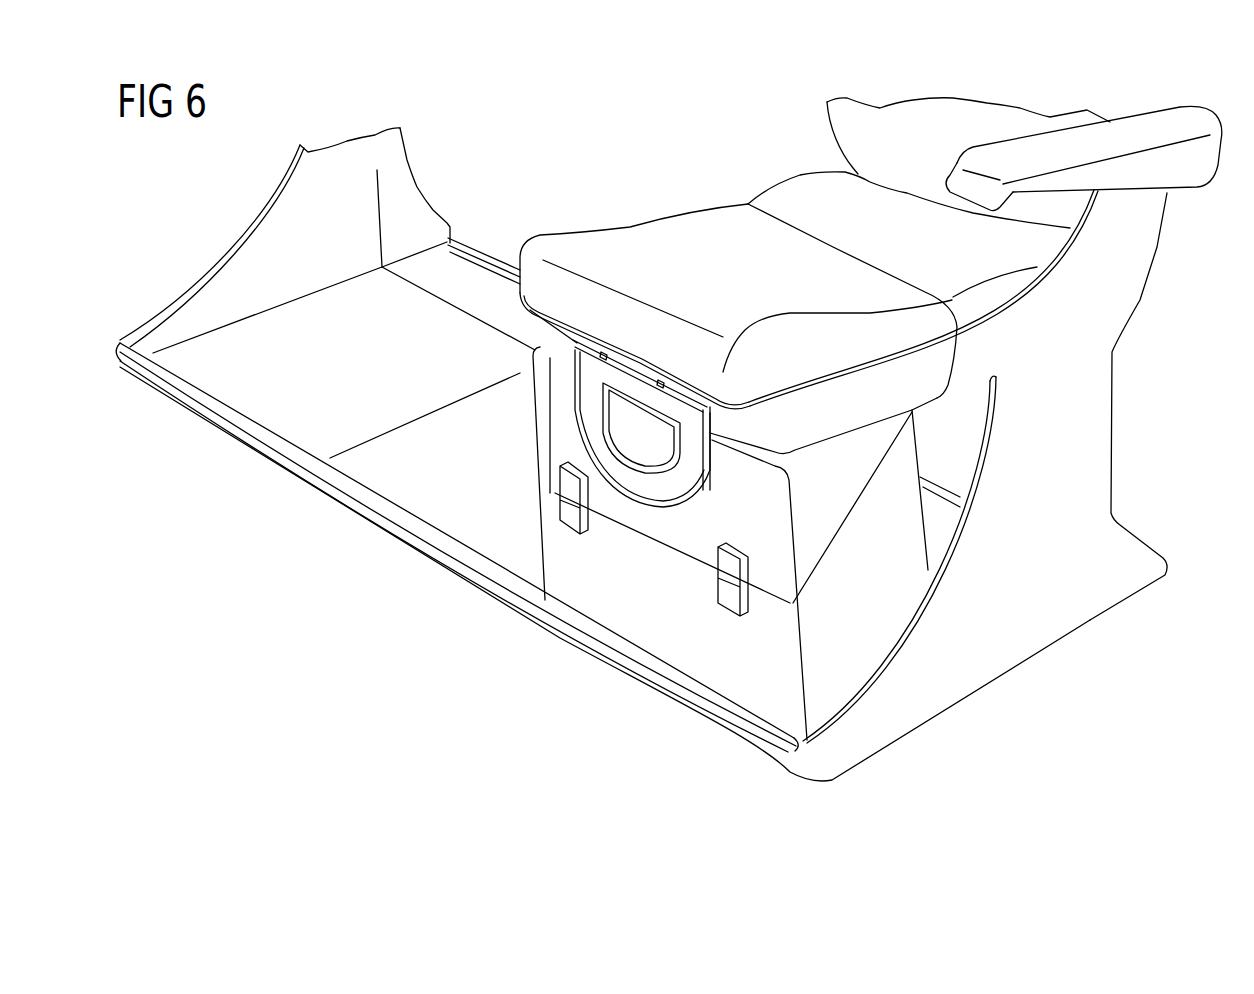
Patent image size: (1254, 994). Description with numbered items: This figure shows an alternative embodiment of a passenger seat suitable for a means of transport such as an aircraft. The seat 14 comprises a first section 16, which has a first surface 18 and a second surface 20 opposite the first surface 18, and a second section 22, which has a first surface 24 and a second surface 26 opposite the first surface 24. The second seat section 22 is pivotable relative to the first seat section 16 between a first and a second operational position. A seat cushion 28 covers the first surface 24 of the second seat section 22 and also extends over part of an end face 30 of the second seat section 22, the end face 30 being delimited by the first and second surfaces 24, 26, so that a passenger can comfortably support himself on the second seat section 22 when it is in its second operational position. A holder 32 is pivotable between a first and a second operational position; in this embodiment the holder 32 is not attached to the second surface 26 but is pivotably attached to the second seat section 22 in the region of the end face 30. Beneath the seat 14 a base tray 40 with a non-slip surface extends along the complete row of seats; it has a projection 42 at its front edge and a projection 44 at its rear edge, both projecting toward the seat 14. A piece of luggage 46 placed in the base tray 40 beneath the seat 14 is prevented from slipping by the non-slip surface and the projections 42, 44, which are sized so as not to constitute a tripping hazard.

The seat 14 is at (1022, 257).
The first section 16 is at (997, 337).
The first surface 18 is at (878, 217).
The second surface 20 is at (960, 392).
The second section 22 is at (590, 252).
The first surface 24 is at (638, 240).
The second surface 26 is at (817, 445).
The seat cushion 28 is at (710, 258).
The end face 30 is at (547, 333).
The holder 32 is at (587, 412).
The base tray 40 is at (413, 483).
The projection 42 is at (497, 570).
The projection 44 is at (483, 253).
The piece of luggage 46 is at (653, 622).